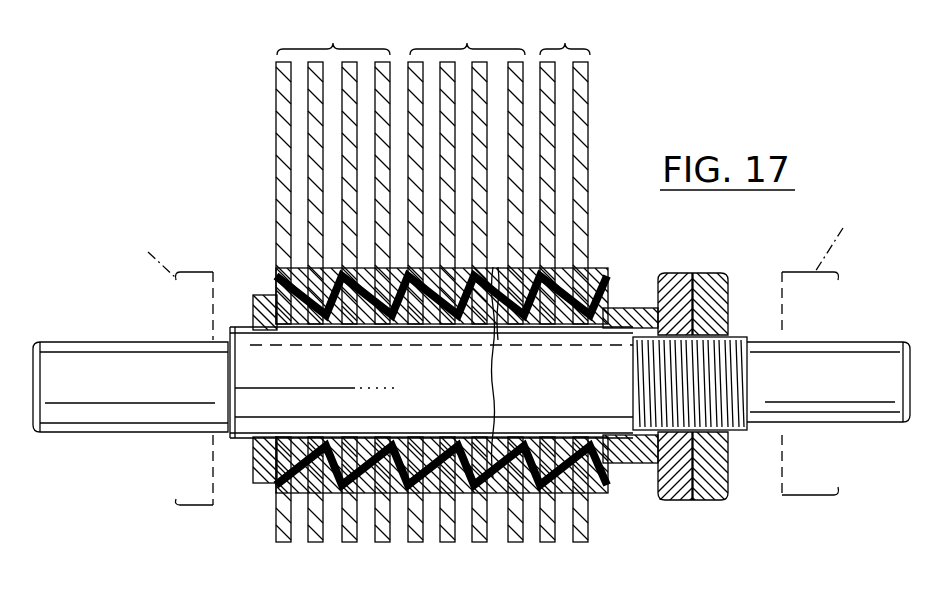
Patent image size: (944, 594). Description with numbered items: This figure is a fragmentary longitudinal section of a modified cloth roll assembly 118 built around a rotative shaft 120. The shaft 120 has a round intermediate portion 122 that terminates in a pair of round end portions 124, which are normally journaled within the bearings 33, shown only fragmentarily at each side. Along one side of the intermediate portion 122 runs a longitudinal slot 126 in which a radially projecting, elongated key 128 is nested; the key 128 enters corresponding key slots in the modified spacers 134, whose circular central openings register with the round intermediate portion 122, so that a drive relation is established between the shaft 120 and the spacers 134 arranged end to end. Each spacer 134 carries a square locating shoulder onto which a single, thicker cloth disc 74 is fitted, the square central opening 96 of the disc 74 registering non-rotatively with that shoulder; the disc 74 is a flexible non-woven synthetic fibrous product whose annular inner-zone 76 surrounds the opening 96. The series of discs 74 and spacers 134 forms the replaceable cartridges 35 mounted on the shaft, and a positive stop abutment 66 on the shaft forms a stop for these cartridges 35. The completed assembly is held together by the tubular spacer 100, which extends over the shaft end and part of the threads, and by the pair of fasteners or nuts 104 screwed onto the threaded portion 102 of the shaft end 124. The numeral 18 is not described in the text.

The heat exchanger core 18 is at (262, 241).
The bearings 33 is at (491, 359).
The replaceable cartridges 35 is at (433, 33).
The positive stop abutment 66 is at (267, 307).
The cloth disc 74 is at (276, 79).
The annular inner-zone 76 is at (581, 268).
The non-circular opening 96 is at (512, 285).
The tubular spacer 100 is at (636, 465).
The threaded portion 102 is at (739, 334).
The fasteners 104 is at (700, 273).
The modified cloth roll assembly 118 is at (250, 108).
The rotative shaft 120 is at (225, 437).
The intermediate portion 122 is at (320, 403).
The end portions 124 is at (836, 425).
The longitudinal slot 126 is at (428, 354).
The key 128 is at (618, 328).
The modified spacer 134 is at (291, 328).